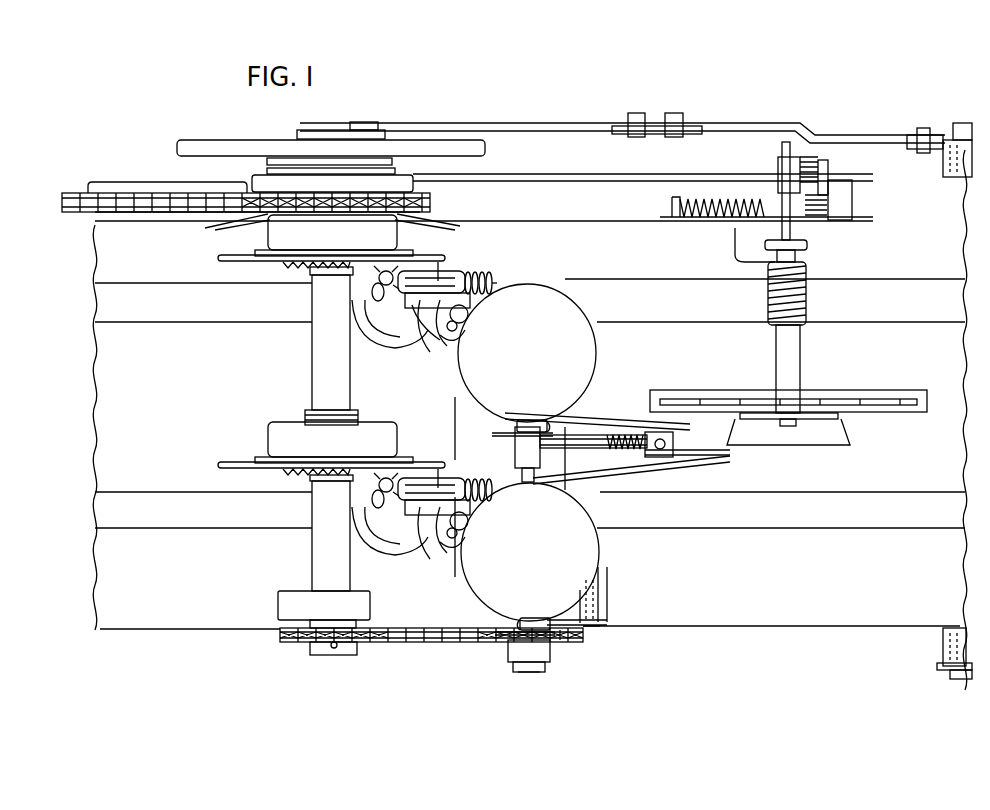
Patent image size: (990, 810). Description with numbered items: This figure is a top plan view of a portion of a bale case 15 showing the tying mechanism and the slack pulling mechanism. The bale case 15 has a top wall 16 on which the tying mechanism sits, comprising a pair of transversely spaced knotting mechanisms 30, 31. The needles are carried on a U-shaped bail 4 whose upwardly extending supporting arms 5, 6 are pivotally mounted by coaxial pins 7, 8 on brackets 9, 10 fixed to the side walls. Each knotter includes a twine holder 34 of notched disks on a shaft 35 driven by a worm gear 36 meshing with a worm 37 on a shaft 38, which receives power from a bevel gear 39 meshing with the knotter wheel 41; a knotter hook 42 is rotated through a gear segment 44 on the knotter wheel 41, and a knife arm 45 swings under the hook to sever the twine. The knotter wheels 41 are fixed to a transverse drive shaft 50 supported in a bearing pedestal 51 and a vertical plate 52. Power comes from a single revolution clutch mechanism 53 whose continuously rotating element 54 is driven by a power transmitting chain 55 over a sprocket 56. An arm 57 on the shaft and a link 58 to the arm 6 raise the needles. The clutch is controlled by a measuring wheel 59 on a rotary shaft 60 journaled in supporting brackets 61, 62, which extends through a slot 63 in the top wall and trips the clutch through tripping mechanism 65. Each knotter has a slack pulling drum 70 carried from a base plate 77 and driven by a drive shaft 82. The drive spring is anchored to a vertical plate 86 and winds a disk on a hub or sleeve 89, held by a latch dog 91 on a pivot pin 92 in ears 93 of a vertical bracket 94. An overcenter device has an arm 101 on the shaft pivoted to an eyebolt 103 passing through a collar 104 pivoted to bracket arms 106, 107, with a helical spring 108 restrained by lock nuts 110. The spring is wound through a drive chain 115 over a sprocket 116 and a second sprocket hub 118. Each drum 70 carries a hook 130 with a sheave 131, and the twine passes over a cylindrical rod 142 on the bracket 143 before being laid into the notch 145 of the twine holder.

The U-shaped bail 4 is at (950, 628).
The supporting arm 5 is at (946, 643).
The supporting arm 6 is at (943, 161).
The coaxial pin 7 is at (960, 679).
The coaxial pin 8 is at (960, 123).
The bracket 9 is at (938, 670).
The bracket 10 is at (940, 135).
The bale case 15 is at (786, 631).
The top wall 16 is at (740, 628).
The knotting mechanism 30 is at (446, 461).
The knotting mechanism 31 is at (459, 265).
The twine holder 34 is at (428, 352).
The shaft 35 is at (470, 313).
The worm gear 36 is at (459, 328).
The worm 37 is at (492, 283).
The shaft 38 is at (438, 262).
The bevel gear 39 is at (386, 272).
The knotter wheel 41 is at (220, 258).
The knotter hook 42 is at (380, 340).
The gear segment 44 is at (331, 346).
The knife arm 45 is at (358, 345).
The transverse drive shaft 50 is at (318, 545).
The bearing pedestal 51 is at (285, 600).
The vertical plate 52 is at (262, 222).
The single revolution clutch mechanism 53 is at (403, 169).
The continuously rotating element 54 is at (252, 180).
The power transmitting chain 55 is at (78, 193).
The sprocket 56 is at (250, 220).
The arm 57 is at (310, 130).
The link 58 is at (388, 124).
The measuring wheel 59 is at (840, 399).
The rotary shaft 60 is at (786, 426).
The supporting bracket 61 is at (838, 418).
The supporting bracket 62 is at (812, 220).
The slot 63 is at (680, 390).
The tripping mechanism 65 is at (823, 157).
The drum 70 is at (583, 356).
The base plate 77 is at (568, 484).
The drive shaft 82 is at (520, 474).
The vertical plate 86 is at (601, 575).
The hub or sleeve 89 is at (540, 673).
The latch dog 91 is at (564, 641).
The pivot pin 92 is at (608, 601).
The ears 93 is at (596, 628).
The vertical bracket 94 is at (607, 583).
The arm 101 is at (584, 436).
The eyebolt 103 is at (670, 440).
The collar 104 is at (655, 456).
The bracket arm 106 is at (628, 472).
The bracket arm 107 is at (580, 414).
The helical spring 108 is at (618, 433).
The lock nuts 110 is at (673, 452).
The drive chain 115 is at (425, 642).
The sprocket 116 is at (305, 643).
The hub 118 is at (510, 655).
The hook 130 is at (494, 436).
The sheave 131 is at (515, 428).
The cylindrical rod 142 is at (458, 342).
The bracket 143 is at (465, 278).
The notch 145 is at (418, 338).